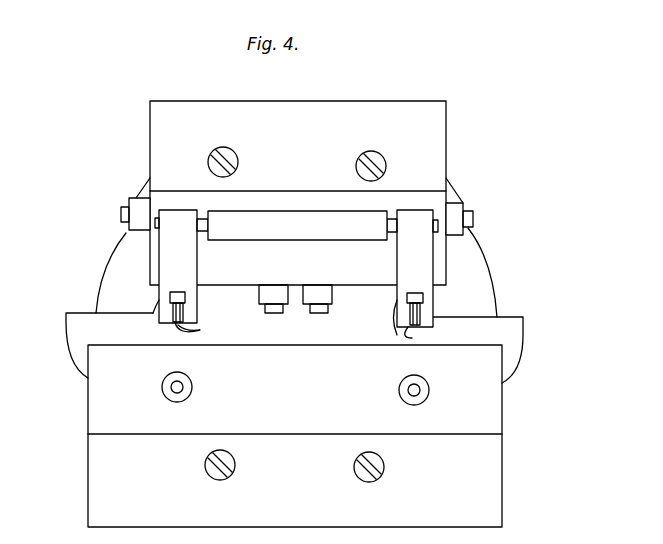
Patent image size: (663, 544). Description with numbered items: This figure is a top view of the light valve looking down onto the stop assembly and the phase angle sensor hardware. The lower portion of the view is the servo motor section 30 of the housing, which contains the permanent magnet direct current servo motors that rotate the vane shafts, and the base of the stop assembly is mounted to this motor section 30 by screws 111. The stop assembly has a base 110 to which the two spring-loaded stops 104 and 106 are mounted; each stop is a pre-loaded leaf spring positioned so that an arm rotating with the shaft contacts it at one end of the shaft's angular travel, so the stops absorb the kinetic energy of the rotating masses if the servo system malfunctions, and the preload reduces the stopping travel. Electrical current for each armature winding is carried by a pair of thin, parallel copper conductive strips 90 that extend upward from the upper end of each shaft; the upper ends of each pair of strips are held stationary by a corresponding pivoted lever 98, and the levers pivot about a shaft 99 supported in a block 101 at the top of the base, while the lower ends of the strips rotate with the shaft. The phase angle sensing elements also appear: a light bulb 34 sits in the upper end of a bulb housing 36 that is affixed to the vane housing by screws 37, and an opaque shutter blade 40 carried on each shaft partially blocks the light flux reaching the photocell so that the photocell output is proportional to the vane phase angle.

The servo motor section 30 is at (490, 252).
The light bulb 34 is at (164, 389).
The bulb housing 36 is at (482, 410).
The screws 37 is at (208, 470).
The shutter blade 40 is at (80, 325).
The conductive strips 90 is at (192, 327).
The pivoted lever 98 is at (182, 259).
The shaft 99 is at (200, 218).
The block 101 is at (318, 232).
The spring-loaded stop 104 is at (320, 315).
The spring-loaded stop 106 is at (138, 200).
The base of the stop assembly 110 is at (357, 288).
The screws 111 is at (234, 151).